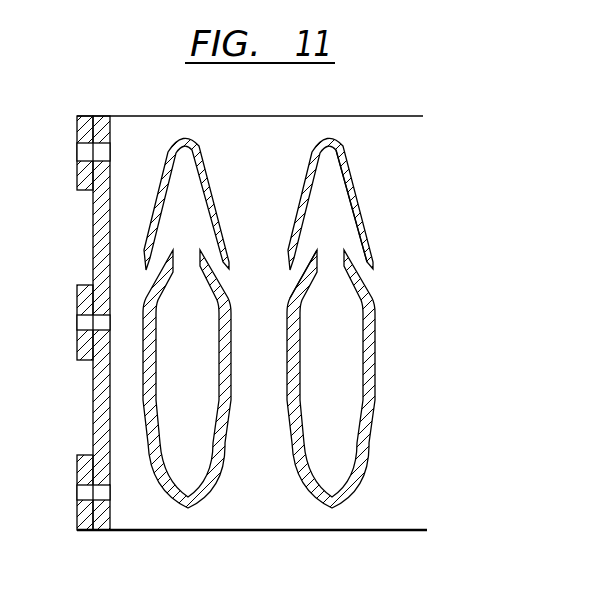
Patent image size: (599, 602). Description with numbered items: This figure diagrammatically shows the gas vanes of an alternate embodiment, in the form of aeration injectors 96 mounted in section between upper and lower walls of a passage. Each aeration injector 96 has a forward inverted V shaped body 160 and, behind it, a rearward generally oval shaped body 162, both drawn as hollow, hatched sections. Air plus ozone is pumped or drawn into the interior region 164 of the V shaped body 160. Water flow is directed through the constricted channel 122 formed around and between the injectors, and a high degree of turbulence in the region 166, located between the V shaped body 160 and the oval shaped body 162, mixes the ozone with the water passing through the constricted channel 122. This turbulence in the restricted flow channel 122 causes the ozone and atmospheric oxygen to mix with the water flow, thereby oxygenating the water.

The aeration injector 96 is at (364, 315).
The constricted channel 122 is at (252, 180).
The V shaped body 160 is at (389, 196).
The oval shaped body 162 is at (345, 379).
The interior region 164 is at (332, 190).
The turbulence region 166 is at (298, 263).